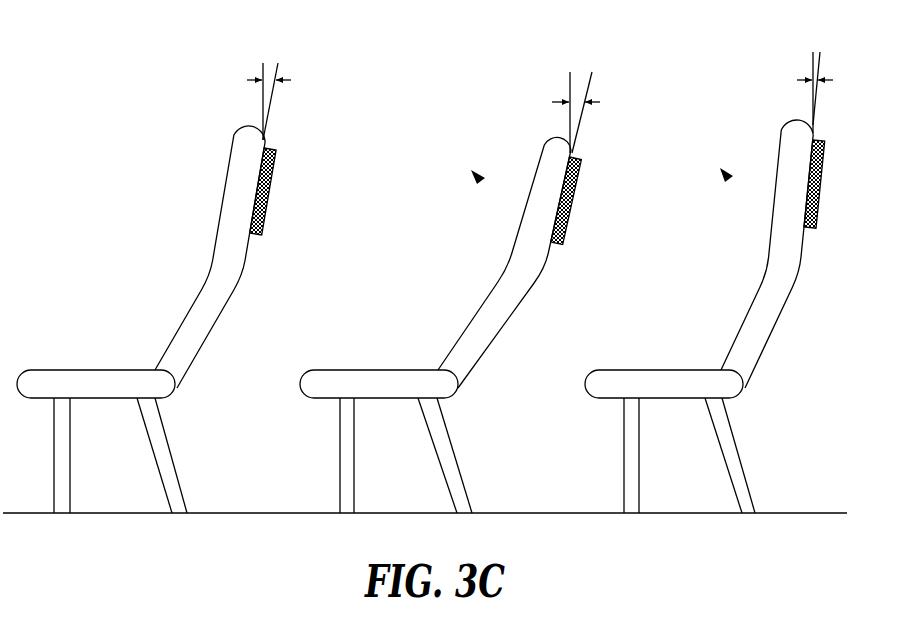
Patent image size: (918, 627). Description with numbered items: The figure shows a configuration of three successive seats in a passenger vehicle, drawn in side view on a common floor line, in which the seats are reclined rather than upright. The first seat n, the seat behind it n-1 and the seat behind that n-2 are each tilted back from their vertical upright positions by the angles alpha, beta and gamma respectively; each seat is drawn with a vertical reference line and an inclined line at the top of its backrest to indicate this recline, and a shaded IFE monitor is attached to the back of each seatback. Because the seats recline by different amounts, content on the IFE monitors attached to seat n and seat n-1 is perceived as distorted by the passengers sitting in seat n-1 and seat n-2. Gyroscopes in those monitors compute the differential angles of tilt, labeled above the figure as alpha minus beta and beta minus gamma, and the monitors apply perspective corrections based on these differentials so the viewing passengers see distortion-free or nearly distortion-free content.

The seat n is at (146, 319).
The seat n-1 is at (440, 265).
The seat n-2 is at (716, 265).